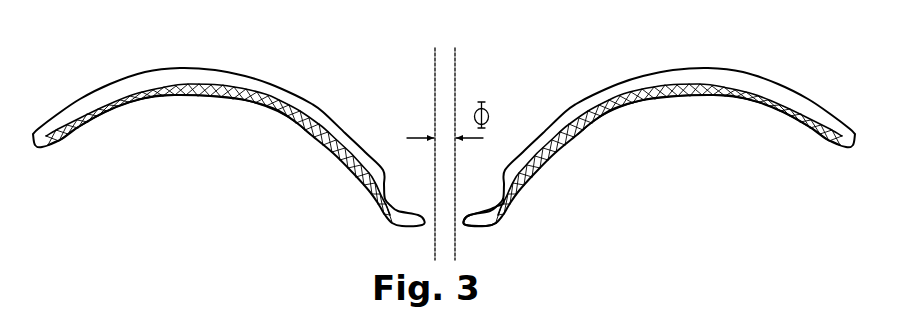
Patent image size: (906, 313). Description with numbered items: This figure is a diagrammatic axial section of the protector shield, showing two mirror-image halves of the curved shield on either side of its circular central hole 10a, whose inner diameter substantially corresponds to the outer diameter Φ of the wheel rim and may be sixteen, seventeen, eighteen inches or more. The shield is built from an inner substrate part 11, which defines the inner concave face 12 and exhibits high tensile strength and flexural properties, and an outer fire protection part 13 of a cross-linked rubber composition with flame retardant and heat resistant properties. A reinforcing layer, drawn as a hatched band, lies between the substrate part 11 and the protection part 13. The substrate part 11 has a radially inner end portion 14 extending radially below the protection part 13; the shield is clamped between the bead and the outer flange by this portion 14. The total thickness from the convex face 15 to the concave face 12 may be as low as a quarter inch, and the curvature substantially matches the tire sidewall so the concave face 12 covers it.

The convex face 15 is at (214, 70).
The inner concave face 12 is at (217, 101).
The outer fire protection part 13 is at (633, 81).
The inner substrate part 11 is at (687, 97).
The radially inner end portion 14 is at (482, 226).
The circular central hole 10a is at (445, 223).